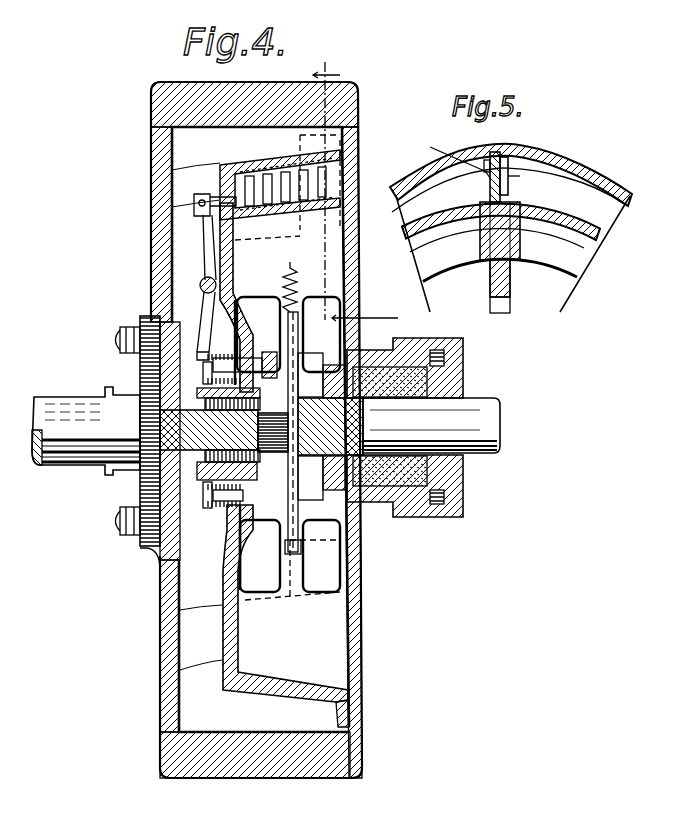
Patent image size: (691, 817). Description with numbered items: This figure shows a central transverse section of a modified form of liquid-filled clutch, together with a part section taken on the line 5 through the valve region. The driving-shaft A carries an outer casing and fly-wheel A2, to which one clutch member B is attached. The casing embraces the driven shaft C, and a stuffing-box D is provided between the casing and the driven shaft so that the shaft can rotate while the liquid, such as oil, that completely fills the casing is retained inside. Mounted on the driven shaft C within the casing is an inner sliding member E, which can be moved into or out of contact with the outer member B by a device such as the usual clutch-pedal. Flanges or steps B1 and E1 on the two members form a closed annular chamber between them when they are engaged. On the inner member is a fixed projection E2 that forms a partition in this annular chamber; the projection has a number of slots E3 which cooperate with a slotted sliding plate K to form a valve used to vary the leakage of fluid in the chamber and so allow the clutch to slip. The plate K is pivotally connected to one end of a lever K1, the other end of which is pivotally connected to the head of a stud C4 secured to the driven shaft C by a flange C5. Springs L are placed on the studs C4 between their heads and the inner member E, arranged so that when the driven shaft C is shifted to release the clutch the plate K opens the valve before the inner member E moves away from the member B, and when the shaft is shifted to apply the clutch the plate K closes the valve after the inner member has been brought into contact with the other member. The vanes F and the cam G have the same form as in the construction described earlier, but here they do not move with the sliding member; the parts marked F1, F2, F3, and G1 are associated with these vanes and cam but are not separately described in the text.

In FIG. 4, the driving-shaft A is at (63, 425).
In FIG. 4, the outer casing and fly-wheel A2 is at (183, 103).
In FIG. 4, the clutch member B is at (338, 173).
In FIG. 5, the clutch member B is at (565, 240).
In FIG. 4, the flange or step B1 is at (235, 240).
In FIG. 4, the driven shaft C is at (455, 428).
In FIG. 4, the stud C4 is at (205, 358).
In FIG. 4, the flange C5 is at (197, 388).
In FIG. 4, the stuffing-box D is at (420, 472).
In FIG. 4, the inner sliding member E is at (172, 688).
In FIG. 5, the inner sliding member E is at (608, 190).
In FIG. 4, the flange or step E1 is at (350, 703).
In FIG. 4, the fixed projection E2 is at (330, 158).
In FIG. 5, the fixed projection E2 is at (500, 198).
In FIG. 4, the slots E3 is at (345, 124).
In FIG. 5, the slots E3 is at (506, 175).
In FIG. 4, the vanes F is at (292, 243).
In FIG. 5, the vanes F is at (492, 288).
In FIG. 4, the shifter rod F1 is at (296, 345).
In FIG. 4, the rod end F2 is at (308, 530).
In FIG. 4, the spring F3 is at (294, 282).
In FIG. 4, the cam G is at (333, 370).
In FIG. 4, the lower collar G1 is at (345, 495).
In FIG. 4, the slotted sliding plate K is at (222, 177).
In FIG. 5, the slotted sliding plate K is at (457, 152).
In FIG. 4, the lever K1 is at (194, 199).
In FIG. 4, the springs L is at (150, 343).
In FIG. 4, the section line 5 is at (362, 184).